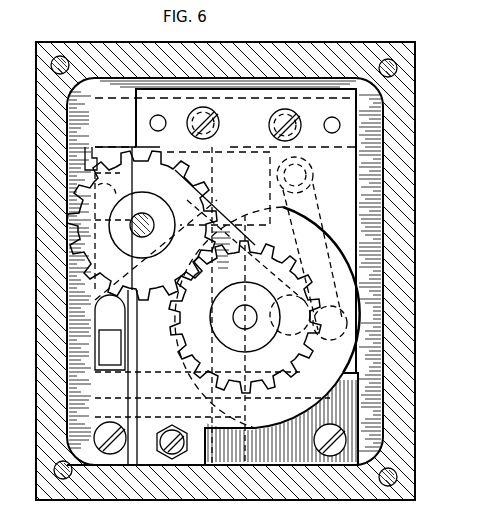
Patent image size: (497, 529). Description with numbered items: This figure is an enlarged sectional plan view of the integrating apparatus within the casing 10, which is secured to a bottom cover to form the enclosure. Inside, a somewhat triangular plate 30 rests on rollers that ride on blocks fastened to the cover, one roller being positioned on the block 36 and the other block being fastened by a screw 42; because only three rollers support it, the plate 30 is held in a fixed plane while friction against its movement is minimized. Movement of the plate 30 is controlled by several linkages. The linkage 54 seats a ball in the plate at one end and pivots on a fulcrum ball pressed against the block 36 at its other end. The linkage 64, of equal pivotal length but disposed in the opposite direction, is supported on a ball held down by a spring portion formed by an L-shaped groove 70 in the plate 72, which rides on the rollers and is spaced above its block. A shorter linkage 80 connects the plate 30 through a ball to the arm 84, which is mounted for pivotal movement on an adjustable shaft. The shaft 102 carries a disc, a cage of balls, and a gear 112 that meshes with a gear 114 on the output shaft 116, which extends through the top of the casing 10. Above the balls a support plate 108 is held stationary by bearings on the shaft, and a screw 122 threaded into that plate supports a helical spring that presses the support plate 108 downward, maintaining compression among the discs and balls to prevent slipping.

The casing 10 is at (408, 191).
The plate 30 is at (306, 362).
The block 36 is at (92, 152).
The screw 42 is at (365, 440).
The linkage 54 is at (102, 285).
The linkage 64 is at (243, 350).
The L-shaped groove 70 is at (220, 465).
The plate 72 is at (353, 405).
The linkage 80 is at (306, 333).
The arm 84 is at (318, 200).
The shaft 102 is at (256, 308).
The support plate 108 is at (357, 230).
The gear 112 is at (140, 305).
The gear 114 is at (190, 185).
The output shaft 116 is at (155, 197).
The screw 122 is at (175, 462).